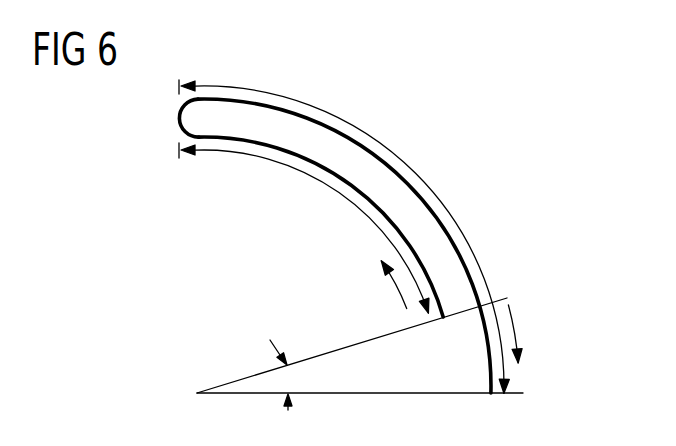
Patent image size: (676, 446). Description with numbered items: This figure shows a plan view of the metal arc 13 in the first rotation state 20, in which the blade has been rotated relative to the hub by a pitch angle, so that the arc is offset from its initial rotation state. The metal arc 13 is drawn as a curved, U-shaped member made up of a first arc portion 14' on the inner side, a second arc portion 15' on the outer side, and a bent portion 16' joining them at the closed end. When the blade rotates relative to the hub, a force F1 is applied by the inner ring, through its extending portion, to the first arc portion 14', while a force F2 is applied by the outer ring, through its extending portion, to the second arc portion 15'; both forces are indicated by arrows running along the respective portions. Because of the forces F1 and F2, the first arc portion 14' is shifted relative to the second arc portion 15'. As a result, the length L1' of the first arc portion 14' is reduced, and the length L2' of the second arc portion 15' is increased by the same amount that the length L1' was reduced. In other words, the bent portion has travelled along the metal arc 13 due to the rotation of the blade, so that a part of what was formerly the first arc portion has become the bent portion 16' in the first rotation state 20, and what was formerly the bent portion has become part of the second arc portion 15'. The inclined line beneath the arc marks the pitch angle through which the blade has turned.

The metal arc 13 is at (298, 222).
The first arc portion 14' is at (321, 227).
The second arc portion 15' is at (344, 228).
The bent portion 16' is at (152, 119).
The first rotation state 20 is at (490, 260).
The length of the first arc portion L1' is at (304, 228).
The length of the second arc portion L2' is at (344, 236).
The force F1 is at (393, 290).
The force F2 is at (517, 325).